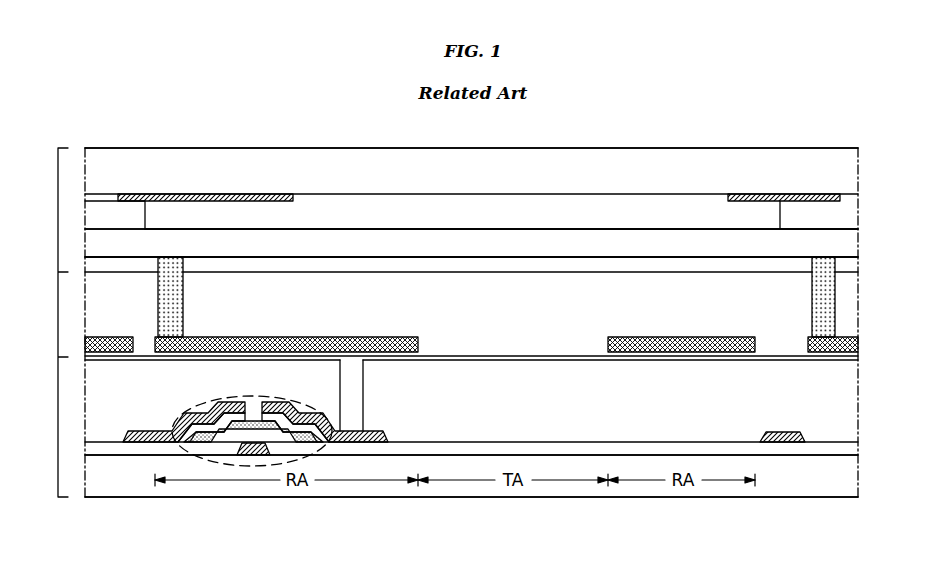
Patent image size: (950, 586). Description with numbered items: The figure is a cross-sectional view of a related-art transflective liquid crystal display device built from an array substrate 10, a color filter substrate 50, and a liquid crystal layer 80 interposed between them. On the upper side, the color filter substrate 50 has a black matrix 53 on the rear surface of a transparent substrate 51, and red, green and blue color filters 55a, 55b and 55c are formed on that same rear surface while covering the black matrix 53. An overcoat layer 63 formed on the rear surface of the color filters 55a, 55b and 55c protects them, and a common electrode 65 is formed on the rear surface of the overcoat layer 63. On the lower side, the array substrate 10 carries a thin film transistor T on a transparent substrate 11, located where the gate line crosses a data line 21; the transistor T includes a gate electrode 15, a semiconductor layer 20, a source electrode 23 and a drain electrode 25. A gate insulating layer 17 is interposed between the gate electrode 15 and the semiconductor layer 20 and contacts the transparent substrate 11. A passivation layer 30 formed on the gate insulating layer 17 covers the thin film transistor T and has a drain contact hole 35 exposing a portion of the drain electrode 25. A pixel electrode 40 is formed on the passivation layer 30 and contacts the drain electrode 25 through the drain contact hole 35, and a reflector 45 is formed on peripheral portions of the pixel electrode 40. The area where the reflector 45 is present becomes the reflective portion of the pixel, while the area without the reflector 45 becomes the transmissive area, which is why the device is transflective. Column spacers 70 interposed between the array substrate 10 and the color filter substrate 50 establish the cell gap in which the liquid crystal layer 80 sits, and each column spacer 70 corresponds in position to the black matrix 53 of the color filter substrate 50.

The array substrate 10 is at (441, 453).
The transparent substrate 11 is at (471, 476).
The gate electrode 15 is at (248, 456).
The gate insulating layer 17 is at (838, 448).
The semiconductor layer 20 is at (253, 421).
The data line 21 is at (786, 431).
The source electrode 23 is at (156, 430).
The drain electrode 25 is at (322, 413).
The passivation layer 30 is at (238, 368).
The drain contact hole 35 is at (355, 352).
The pixel electrode 40 is at (121, 356).
The reflector 45 is at (95, 334).
The color filter substrate 50 is at (442, 202).
The transparent substrate 51 is at (471, 163).
The black matrix 53 is at (212, 196).
The red color filter 55a is at (356, 206).
The green color filter 55b is at (846, 212).
The blue color filter 55c is at (122, 212).
The overcoat layer 63 is at (836, 247).
The common electrode 65 is at (668, 264).
The column spacer 70 is at (171, 318).
The liquid crystal layer 80 is at (898, 313).
The thin film transistor T is at (210, 458).